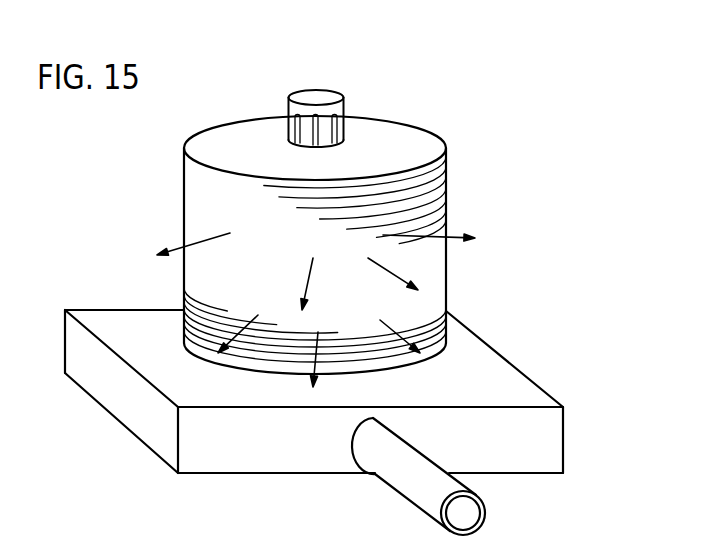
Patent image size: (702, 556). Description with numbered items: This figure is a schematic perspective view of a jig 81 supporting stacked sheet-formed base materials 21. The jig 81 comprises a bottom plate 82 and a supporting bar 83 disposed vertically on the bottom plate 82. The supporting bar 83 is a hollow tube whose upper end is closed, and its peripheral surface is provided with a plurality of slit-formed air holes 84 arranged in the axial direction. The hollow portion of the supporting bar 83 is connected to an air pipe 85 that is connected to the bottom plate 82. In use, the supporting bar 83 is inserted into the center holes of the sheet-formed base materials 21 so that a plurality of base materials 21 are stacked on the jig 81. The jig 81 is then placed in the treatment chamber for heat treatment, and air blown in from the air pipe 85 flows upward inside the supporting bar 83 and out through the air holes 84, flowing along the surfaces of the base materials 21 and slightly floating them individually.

The sheet-formed base material 21 is at (430, 153).
The jig 81 is at (482, 306).
The bottom plate 82 is at (533, 392).
The supporting bar 83 is at (325, 95).
The slit-formed air holes 84 is at (344, 112).
The air pipe 85 is at (420, 492).